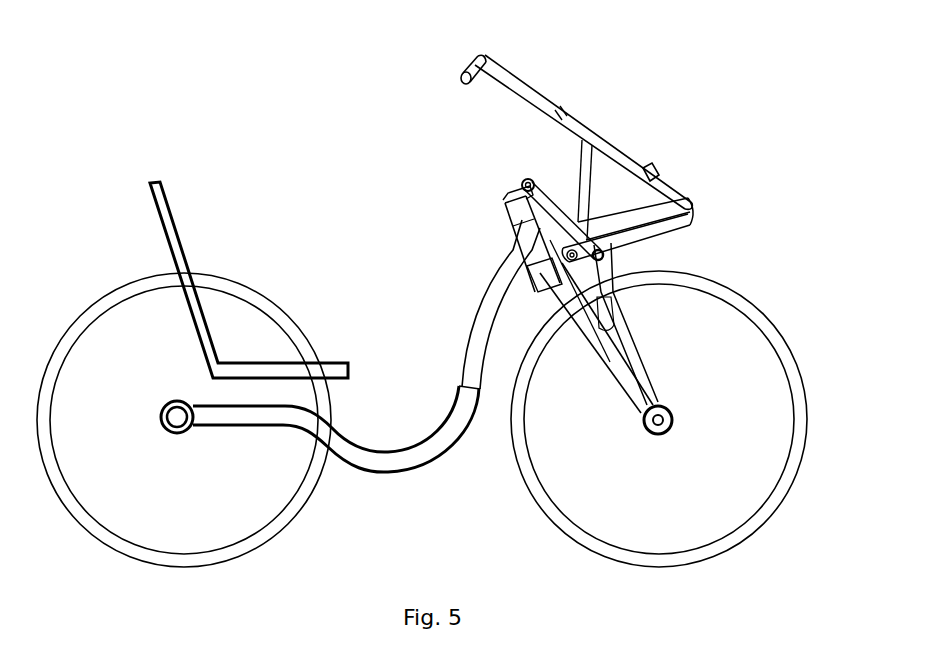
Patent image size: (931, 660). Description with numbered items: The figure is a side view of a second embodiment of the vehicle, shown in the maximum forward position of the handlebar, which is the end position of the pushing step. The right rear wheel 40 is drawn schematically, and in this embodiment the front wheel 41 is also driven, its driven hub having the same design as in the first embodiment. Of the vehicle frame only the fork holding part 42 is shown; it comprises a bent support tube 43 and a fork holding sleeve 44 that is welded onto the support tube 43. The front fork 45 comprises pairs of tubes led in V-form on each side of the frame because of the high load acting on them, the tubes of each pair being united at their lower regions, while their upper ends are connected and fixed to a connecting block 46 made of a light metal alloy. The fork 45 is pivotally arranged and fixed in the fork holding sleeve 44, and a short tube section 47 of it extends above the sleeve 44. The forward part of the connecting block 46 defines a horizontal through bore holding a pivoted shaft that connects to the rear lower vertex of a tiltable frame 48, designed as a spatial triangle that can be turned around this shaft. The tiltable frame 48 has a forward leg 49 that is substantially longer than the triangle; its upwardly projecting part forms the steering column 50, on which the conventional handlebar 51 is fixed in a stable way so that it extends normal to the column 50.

The right rear wheel 40 is at (283, 507).
The front wheel 41 is at (533, 486).
The fork holding part 42 is at (456, 326).
The bent support tube 43 is at (463, 369).
The fork holding sleeve 44 is at (530, 230).
The front fork 45 is at (607, 363).
The connecting block 46 is at (537, 280).
The short tube section 47 is at (505, 203).
The tiltable frame 48 is at (633, 147).
The forward leg 49 is at (654, 178).
The steering column 50 is at (506, 78).
The handlebar 51 is at (458, 77).